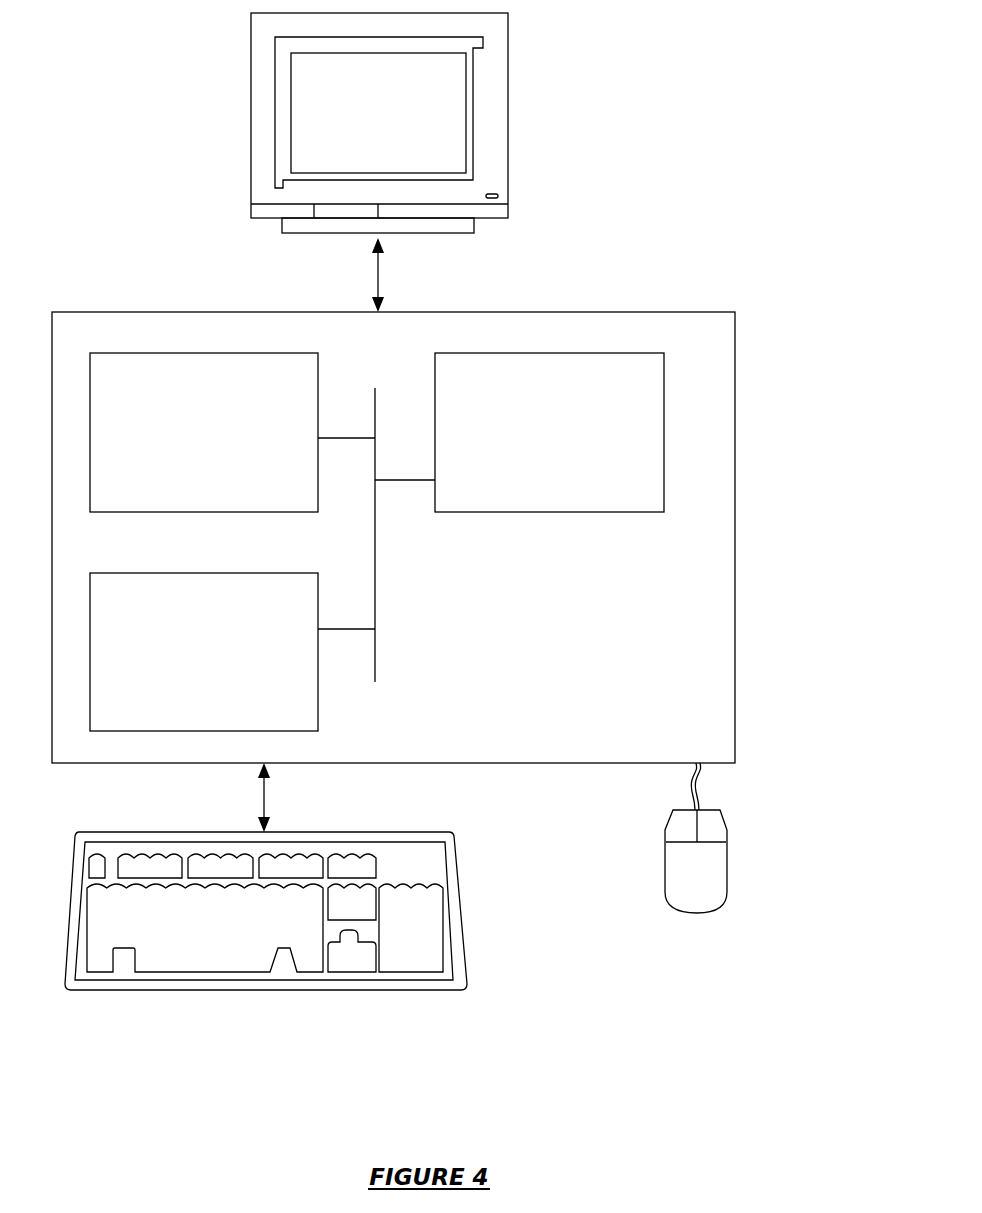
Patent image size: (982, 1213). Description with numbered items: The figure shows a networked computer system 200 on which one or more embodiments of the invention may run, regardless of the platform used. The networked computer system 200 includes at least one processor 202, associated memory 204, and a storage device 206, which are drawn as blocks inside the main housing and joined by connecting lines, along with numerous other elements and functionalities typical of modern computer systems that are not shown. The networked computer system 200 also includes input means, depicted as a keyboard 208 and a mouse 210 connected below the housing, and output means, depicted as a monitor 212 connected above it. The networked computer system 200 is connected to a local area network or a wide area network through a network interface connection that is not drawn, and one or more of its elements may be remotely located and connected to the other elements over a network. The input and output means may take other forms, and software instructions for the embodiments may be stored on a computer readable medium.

The networked computer system 200 is at (754, 167).
The processor 202 is at (550, 446).
The memory 204 is at (182, 446).
The storage device 206 is at (180, 664).
The keyboard 208 is at (172, 951).
The mouse 210 is at (675, 884).
The monitor 212 is at (357, 124).